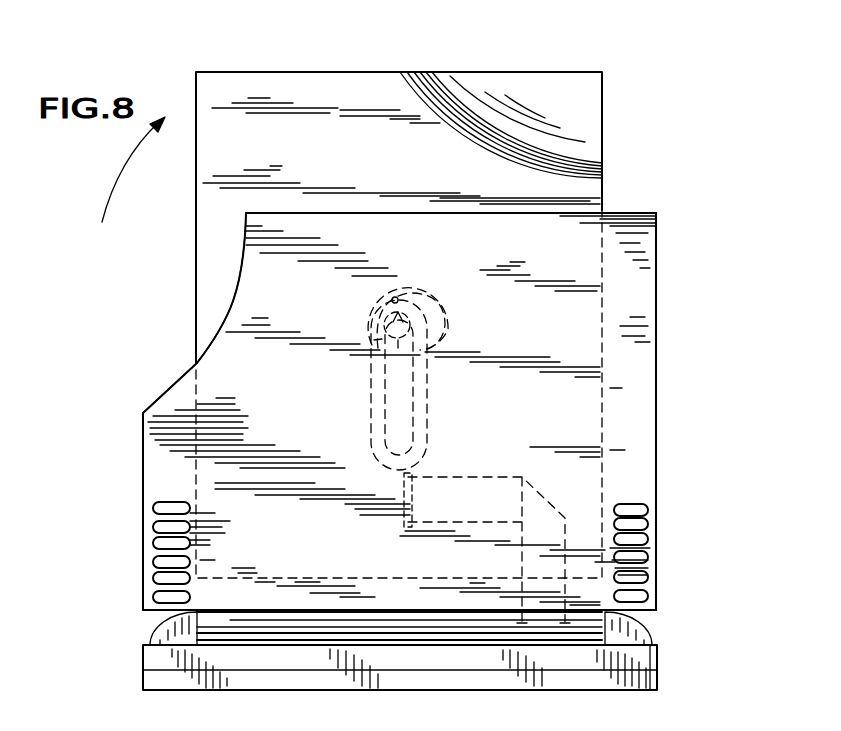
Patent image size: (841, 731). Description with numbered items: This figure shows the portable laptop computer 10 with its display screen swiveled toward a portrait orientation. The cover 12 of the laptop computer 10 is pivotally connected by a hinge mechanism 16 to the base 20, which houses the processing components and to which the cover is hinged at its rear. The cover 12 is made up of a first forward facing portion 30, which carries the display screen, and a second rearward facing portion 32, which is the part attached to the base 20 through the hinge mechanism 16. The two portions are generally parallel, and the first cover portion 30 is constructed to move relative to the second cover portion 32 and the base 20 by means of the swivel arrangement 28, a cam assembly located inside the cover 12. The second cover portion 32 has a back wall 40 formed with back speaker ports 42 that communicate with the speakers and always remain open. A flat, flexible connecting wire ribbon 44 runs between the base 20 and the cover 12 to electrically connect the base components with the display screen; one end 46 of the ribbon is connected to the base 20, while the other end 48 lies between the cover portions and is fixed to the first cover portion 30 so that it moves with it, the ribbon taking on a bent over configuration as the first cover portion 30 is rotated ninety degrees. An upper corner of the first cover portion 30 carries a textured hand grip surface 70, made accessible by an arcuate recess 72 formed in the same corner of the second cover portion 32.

The portable laptop computer 10 is at (456, 64).
The cover 12 is at (616, 204).
The hinge mechanism 16 is at (640, 640).
The base 20 is at (670, 682).
The swivel arrangement 28 is at (460, 316).
The first forward facing portion 30 is at (366, 88).
The second rearward facing portion 32 is at (638, 432).
The back wall 40 is at (160, 466).
The back speaker ports 42 is at (160, 527).
The connecting wire ribbon 44 is at (488, 502).
The end of wire ribbon 46 is at (525, 610).
The another end of wire ribbon 48 is at (403, 480).
The textured hand grip surface 70 is at (590, 116).
The arcuate recess 72 is at (168, 392).